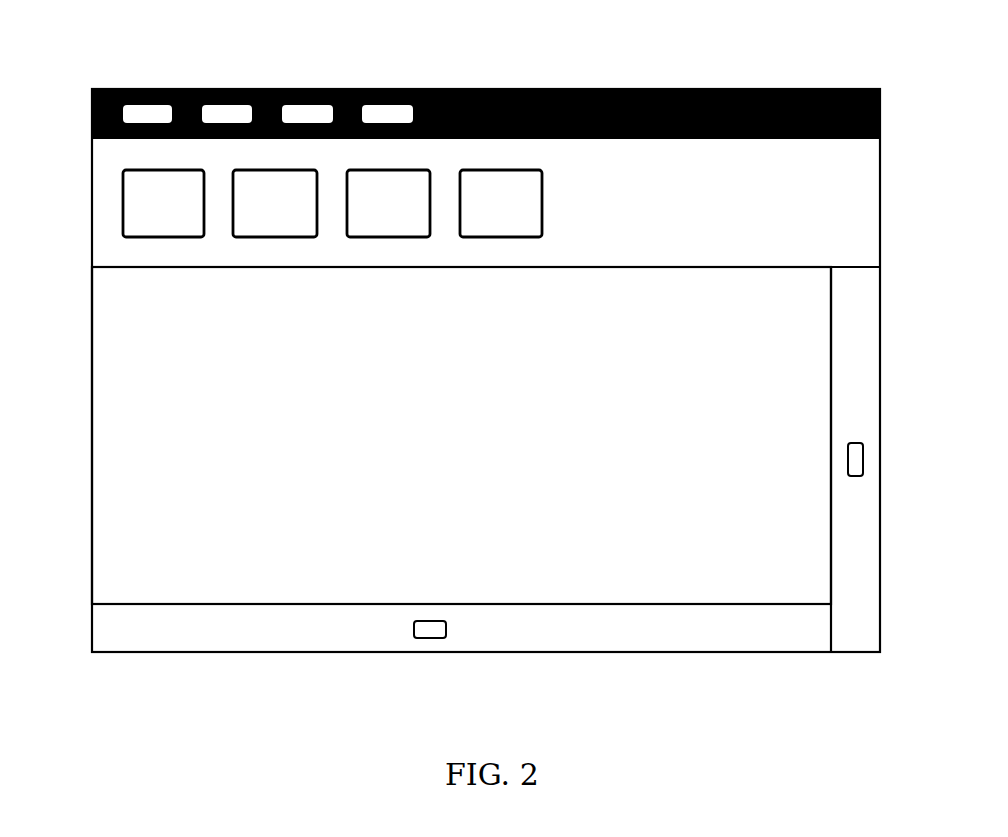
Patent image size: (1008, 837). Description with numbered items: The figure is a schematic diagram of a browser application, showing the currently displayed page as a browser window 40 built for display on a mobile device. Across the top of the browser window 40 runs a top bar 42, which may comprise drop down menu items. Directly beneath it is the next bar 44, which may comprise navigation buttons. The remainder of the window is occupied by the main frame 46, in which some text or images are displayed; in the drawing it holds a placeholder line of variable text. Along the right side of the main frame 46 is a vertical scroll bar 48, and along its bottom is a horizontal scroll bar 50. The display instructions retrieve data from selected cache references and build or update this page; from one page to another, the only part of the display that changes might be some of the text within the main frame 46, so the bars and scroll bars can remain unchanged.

The browser window 40 is at (220, 60).
The top bar 42 is at (93, 116).
The next bar 44 is at (93, 214).
The main frame 46 is at (137, 432).
The vertical scroll bar 48 is at (856, 457).
The horizontal scroll bar 50 is at (446, 630).